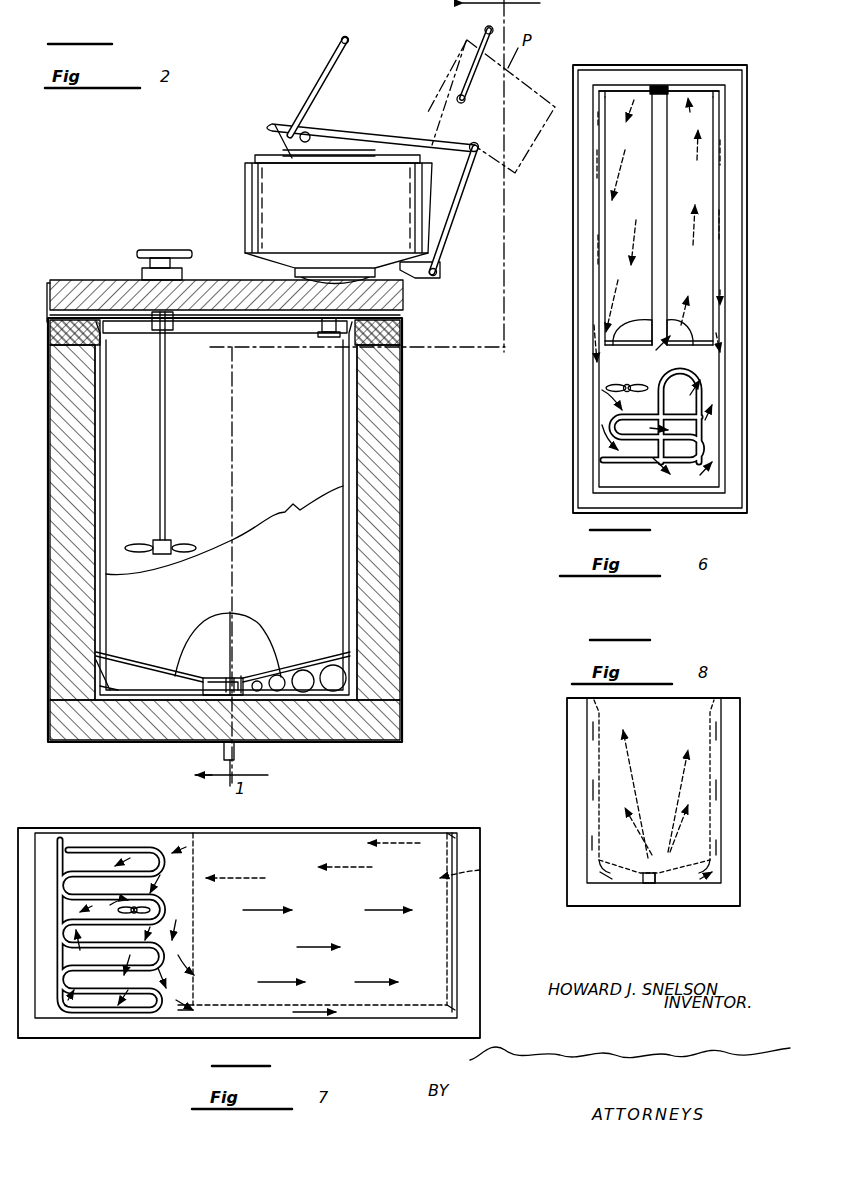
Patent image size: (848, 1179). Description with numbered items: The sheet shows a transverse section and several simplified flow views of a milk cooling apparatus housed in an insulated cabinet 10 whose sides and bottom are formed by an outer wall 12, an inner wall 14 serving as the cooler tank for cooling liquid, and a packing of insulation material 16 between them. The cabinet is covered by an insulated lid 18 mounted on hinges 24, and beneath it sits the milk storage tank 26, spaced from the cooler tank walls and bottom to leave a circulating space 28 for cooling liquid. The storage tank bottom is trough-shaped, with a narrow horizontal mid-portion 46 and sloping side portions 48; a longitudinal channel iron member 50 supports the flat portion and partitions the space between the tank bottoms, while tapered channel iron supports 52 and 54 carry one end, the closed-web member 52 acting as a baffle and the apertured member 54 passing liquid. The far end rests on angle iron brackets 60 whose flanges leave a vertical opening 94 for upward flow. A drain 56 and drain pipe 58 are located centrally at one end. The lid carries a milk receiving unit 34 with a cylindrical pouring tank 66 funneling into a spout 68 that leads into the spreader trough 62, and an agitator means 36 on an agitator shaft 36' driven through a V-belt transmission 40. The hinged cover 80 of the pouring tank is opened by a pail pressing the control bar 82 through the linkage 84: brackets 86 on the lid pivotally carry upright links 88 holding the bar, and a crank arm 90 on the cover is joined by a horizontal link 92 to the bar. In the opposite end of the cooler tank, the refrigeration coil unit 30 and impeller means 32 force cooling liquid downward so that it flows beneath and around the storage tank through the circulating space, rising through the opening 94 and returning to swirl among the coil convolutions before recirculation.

In FIG. 2, the insulated cabinet 10 is at (404, 467).
In FIG. 6, the insulated cabinet 10 is at (571, 396).
In FIG. 8, the insulated cabinet 10 is at (565, 786).
In FIG. 7, the insulated cabinet 10 is at (56, 1042).
In FIG. 2, the outer wall 12 is at (402, 523).
In FIG. 2, the inner wall (cooler tank) 14 is at (104, 600).
In FIG. 2, the insulation material 16 is at (398, 558).
In FIG. 2, the insulated lid 18 is at (106, 282).
In FIG. 2, the hinges 24 is at (48, 318).
In FIG. 2, the milk storage tank 26 is at (224, 536).
In FIG. 6, the milk storage tank 26 is at (712, 313).
In FIG. 8, the milk storage tank 26 is at (656, 731).
In FIG. 7, the milk storage tank 26 is at (306, 893).
In FIG. 2, the circulating space 28 is at (104, 500).
In FIG. 6, the circulating space 28 is at (703, 88).
In FIG. 8, the circulating space 28 is at (590, 760).
In FIG. 7, the circulating space 28 is at (452, 946).
In FIG. 6, the refrigeration coil unit 30 is at (642, 457).
In FIG. 7, the refrigeration coil unit 30 is at (110, 850).
In FIG. 6, the cooling liquid impeller means 32 is at (626, 384).
In FIG. 7, the cooling liquid impeller means 32 is at (152, 913).
In FIG. 2, the milk receiving unit 34 is at (243, 192).
In FIG. 2, the agitator means 36 is at (165, 530).
In FIG. 2, the agitator shaft 36' is at (179, 426).
In FIG. 2, the V-belt transmission 40 is at (145, 252).
In FIG. 2, the horizontal mid-portion 46 is at (233, 672).
In FIG. 6, the horizontal mid-portion 46 is at (662, 160).
In FIG. 8, the horizontal mid-portion 46 is at (654, 884).
In FIG. 2, the sloping side portions 48 is at (146, 664).
In FIG. 6, the sloping side portions 48 is at (710, 190).
In FIG. 8, the sloping side portions 48 is at (704, 870).
In FIG. 2, the channel iron member 50 is at (210, 679).
In FIG. 6, the channel iron member 50 is at (642, 322).
In FIG. 8, the channel iron member 50 is at (645, 884).
In FIG. 7, the channel iron member 50 is at (186, 1014).
In FIG. 2, the tapered channel iron support 52 is at (120, 670).
In FIG. 6, the tapered channel iron support 52 is at (632, 346).
In FIG. 2, the tapered channel iron support 54 is at (277, 662).
In FIG. 6, the tapered channel iron support 54 is at (684, 346).
In FIG. 2, the drain 56 is at (243, 682).
In FIG. 2, the drain pipe 58 is at (236, 753).
In FIG. 6, the angle iron brackets 60 is at (620, 88).
In FIG. 2, the spreader trough 62 is at (328, 333).
In FIG. 2, the pouring tank 66 is at (338, 219).
In FIG. 2, the spout 68 is at (334, 338).
In FIG. 2, the hinged cover 80 is at (330, 62).
In FIG. 2, the control bar 82 is at (480, 148).
In FIG. 2, the linkage 84 is at (345, 127).
In FIG. 2, the brackets 86 is at (420, 278).
In FIG. 2, the upright links 88 is at (455, 215).
In FIG. 2, the crank arm 90 is at (300, 132).
In FIG. 2, the horizontal link 92 is at (406, 137).
In FIG. 6, the vertical opening 94 is at (657, 86).